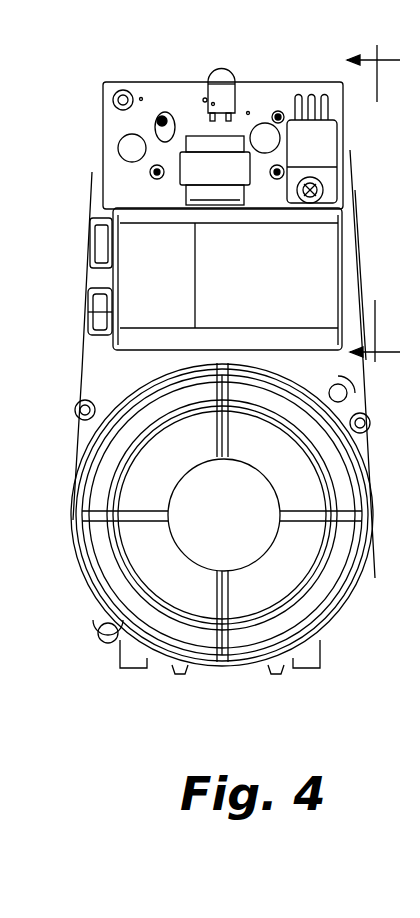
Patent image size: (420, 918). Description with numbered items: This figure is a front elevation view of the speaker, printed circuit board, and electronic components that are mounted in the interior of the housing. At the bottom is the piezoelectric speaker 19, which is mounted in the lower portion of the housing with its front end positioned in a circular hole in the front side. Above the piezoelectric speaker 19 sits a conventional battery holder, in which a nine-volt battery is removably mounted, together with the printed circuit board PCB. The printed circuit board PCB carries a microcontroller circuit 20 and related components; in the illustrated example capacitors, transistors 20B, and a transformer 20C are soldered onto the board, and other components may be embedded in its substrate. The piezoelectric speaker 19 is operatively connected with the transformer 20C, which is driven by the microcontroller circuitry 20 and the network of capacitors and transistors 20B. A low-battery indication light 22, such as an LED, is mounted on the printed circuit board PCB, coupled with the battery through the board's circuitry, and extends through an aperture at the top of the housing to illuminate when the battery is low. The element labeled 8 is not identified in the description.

The printed circuit board PCB is at (105, 118).
The microcontroller circuit 20 is at (122, 174).
The transistors 20B is at (325, 155).
The transformer 20C is at (215, 170).
The low-battery indication light 22 is at (227, 75).
The battery compartment 8 is at (246, 279).
The piezoelectric speaker 19 is at (240, 533).